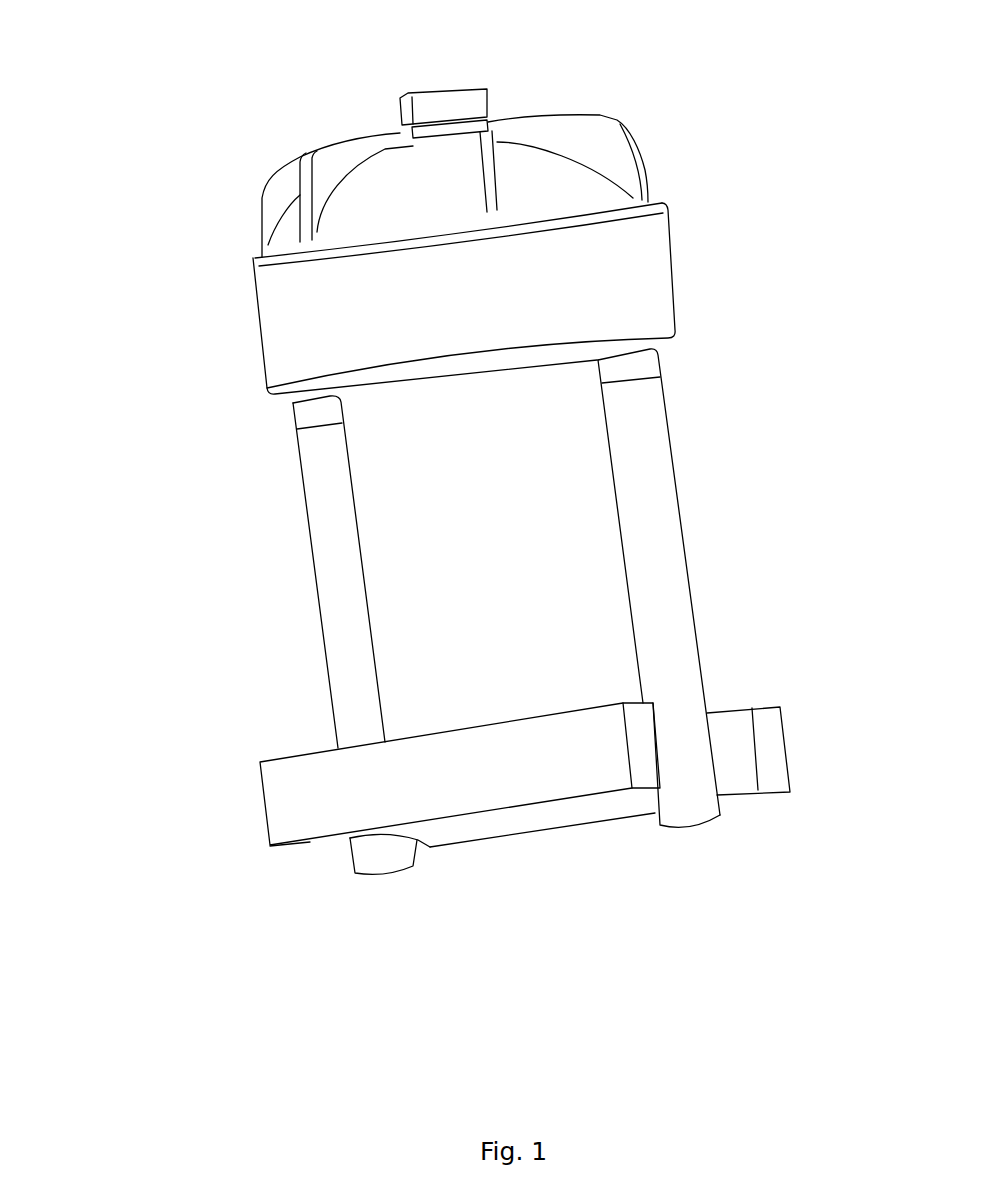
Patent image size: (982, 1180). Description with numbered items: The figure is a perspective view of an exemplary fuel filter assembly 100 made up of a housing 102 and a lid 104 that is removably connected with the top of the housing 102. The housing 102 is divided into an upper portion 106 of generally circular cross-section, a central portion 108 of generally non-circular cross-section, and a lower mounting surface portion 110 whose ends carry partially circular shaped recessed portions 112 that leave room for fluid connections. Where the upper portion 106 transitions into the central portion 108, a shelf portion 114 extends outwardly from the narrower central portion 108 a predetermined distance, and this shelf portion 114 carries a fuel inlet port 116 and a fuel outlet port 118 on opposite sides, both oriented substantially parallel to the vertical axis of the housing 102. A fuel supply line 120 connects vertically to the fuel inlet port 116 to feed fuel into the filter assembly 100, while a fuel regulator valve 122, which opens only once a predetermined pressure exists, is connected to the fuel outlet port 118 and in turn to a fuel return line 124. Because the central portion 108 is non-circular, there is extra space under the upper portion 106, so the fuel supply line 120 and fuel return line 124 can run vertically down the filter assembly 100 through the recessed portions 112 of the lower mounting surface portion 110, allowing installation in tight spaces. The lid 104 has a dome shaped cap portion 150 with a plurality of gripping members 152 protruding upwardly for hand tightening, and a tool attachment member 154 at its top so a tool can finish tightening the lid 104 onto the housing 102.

The fuel filter assembly 100 is at (333, 92).
The housing 102 is at (187, 342).
The lid 104 is at (673, 167).
The upper portion 106 is at (638, 288).
The central portion 108 is at (502, 537).
The lower mounting surface portion 110 is at (773, 758).
The partially circular shaped recessed portions 112 is at (728, 730).
The shelf portion 114 is at (290, 393).
The fuel inlet port 116 is at (643, 363).
The fuel outlet port 118 is at (305, 415).
The fuel supply line 120 is at (660, 527).
The fuel regulator valve 122 is at (312, 443).
The fuel return line 124 is at (348, 578).
The dome shaped cap portion 150 is at (548, 170).
The gripping members 152 is at (640, 136).
The tool attachment member 154 is at (430, 108).